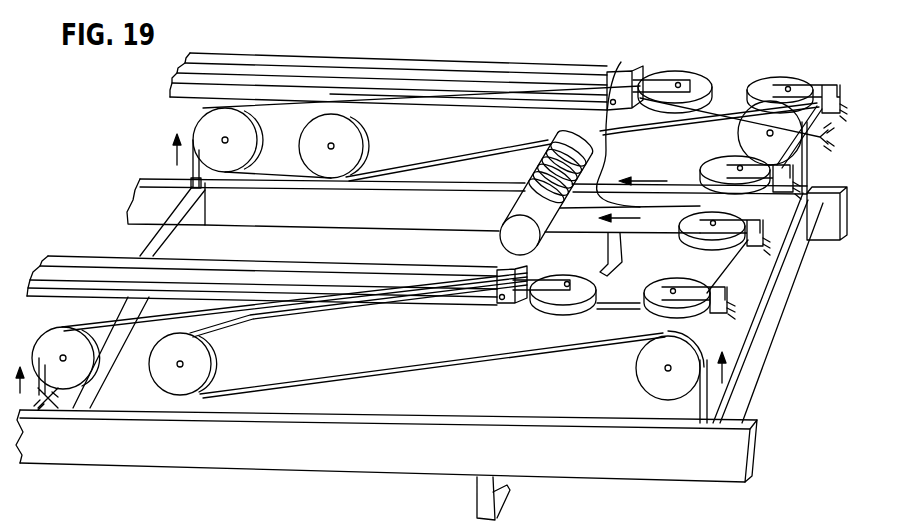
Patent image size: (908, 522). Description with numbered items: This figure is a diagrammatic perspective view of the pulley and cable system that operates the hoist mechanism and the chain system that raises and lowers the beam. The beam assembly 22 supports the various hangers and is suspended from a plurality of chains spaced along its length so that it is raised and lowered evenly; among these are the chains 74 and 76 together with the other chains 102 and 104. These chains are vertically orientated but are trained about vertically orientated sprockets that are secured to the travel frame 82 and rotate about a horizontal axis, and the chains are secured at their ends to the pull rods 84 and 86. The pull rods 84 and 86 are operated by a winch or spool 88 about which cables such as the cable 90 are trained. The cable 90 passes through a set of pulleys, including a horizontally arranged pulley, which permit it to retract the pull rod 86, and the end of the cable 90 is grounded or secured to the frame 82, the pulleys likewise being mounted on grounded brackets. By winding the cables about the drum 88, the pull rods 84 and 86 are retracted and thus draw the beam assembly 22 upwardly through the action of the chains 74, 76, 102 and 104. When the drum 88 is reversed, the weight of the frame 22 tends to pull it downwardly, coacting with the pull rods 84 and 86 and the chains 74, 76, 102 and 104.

The beam assembly 22 is at (314, 469).
The chain 74 is at (709, 392).
The chain 76 is at (812, 166).
The travel frame 82 is at (713, 252).
The pull rod 84 is at (36, 258).
The pull rod 86 is at (258, 53).
The winch or spool 88 is at (549, 138).
The cable 90 is at (621, 62).
The chain 102 is at (49, 397).
The chain 104 is at (195, 165).